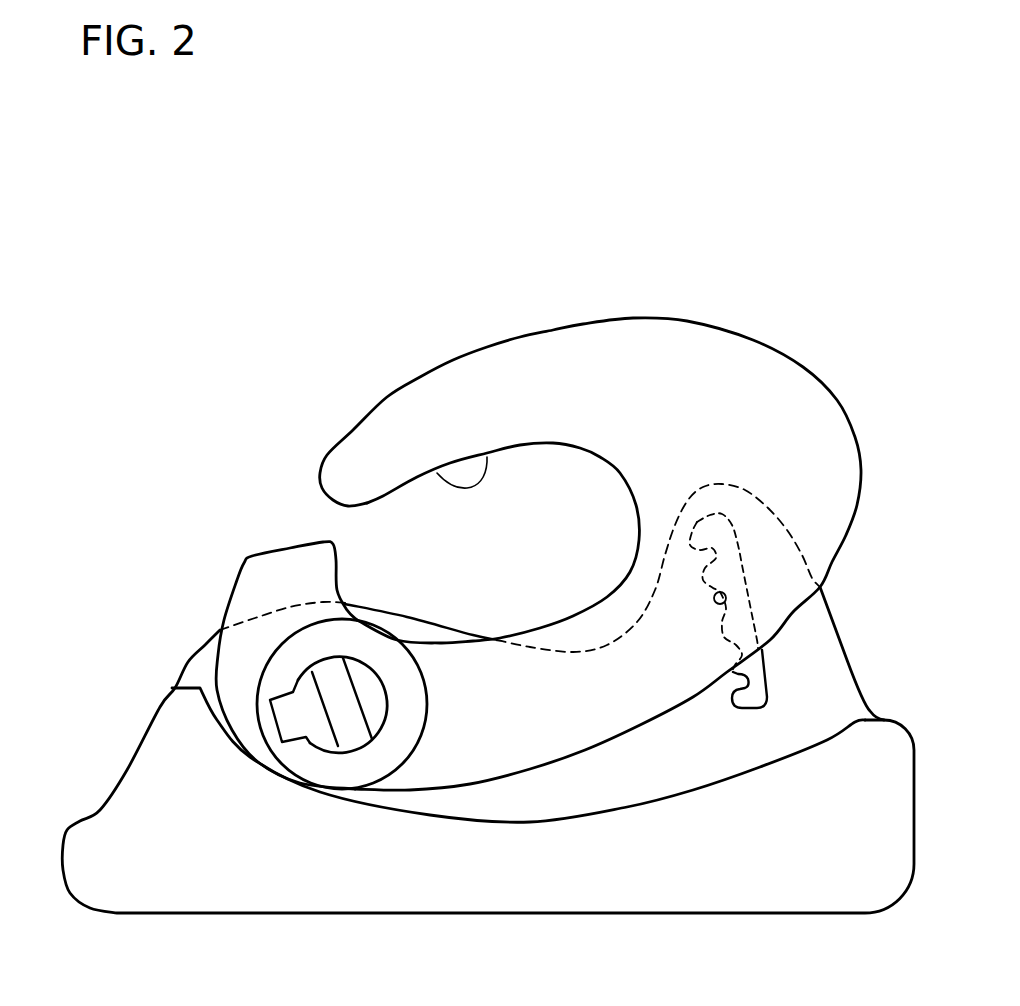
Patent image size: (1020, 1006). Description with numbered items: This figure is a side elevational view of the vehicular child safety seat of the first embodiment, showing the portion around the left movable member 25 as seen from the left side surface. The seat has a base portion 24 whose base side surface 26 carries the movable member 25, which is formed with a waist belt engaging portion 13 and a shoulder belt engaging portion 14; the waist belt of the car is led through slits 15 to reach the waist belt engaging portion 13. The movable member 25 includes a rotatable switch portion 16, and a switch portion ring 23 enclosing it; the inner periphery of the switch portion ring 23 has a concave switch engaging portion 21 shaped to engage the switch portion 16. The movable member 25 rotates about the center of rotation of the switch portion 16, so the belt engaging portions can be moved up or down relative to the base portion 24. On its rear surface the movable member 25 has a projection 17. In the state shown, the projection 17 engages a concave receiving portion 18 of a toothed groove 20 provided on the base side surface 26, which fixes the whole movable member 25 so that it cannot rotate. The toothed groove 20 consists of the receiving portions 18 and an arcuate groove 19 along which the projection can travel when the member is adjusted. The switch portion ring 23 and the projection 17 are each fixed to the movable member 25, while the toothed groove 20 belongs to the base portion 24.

The waist belt engaging portion 13 is at (570, 607).
The shoulder belt engaging portion 14 is at (487, 457).
The slits 15 is at (316, 524).
The switch portion 16 is at (348, 727).
The projection 17 is at (726, 593).
The receiving portions 18 is at (697, 532).
The arcuate groove 19 is at (728, 562).
The toothed groove 20 is at (735, 444).
The switch engaging portion 21 is at (285, 720).
The switch portion ring 23 is at (400, 740).
The base portion 24 is at (793, 882).
The movable member 25 is at (608, 357).
The base side surface 26 is at (813, 672).